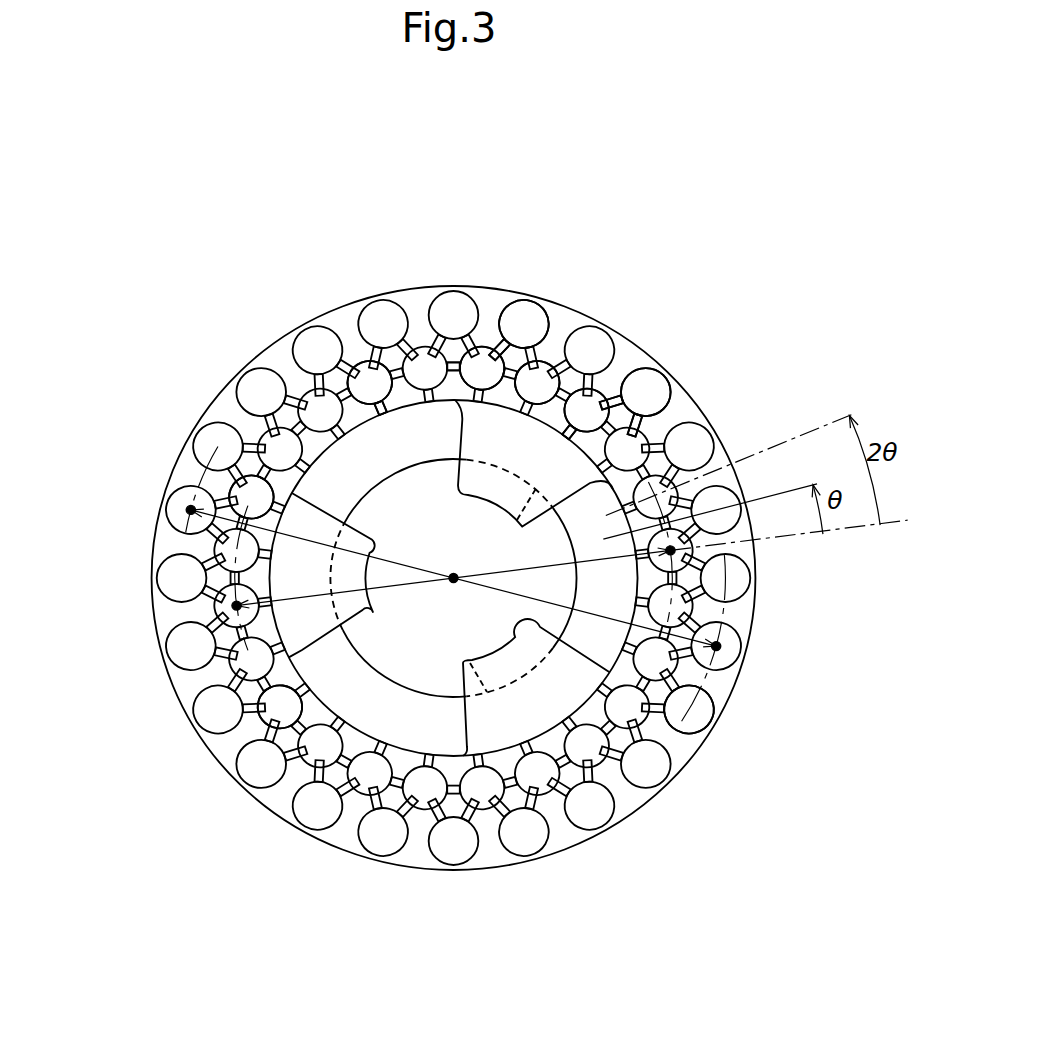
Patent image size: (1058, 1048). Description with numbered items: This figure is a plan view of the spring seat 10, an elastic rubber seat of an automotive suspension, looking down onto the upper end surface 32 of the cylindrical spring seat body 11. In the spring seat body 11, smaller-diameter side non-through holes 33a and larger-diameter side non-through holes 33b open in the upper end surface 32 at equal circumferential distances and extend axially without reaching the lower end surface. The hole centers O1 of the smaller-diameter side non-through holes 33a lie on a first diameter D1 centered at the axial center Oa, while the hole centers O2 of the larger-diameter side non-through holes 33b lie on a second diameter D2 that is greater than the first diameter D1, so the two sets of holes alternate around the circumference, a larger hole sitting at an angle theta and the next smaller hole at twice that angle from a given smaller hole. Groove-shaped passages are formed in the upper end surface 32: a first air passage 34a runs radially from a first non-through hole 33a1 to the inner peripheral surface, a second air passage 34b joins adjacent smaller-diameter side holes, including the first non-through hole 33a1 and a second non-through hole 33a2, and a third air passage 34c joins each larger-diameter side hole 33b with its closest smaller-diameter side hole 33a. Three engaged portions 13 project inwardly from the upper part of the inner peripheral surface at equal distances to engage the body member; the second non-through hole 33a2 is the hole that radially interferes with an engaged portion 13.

The spring seat 10 is at (757, 312).
The spring seat body 11 is at (675, 388).
The engaged portions 13 is at (507, 490).
The upper end surface 32 is at (720, 688).
The smaller-diameter side non-through holes 33a is at (606, 395).
The first non-through hole 33a1 is at (716, 722).
The second non-through hole 33a2 is at (543, 360).
The larger-diameter side non-through holes 33b is at (597, 388).
The first air passages 34a is at (378, 407).
The second air passages 34b is at (452, 366).
The third air passages 34c is at (498, 347).
The first diameter D1 is at (454, 573).
The second diameter D2 is at (453, 578).
The axial center Oa is at (453, 588).
The hole centers of the smaller-diameter side non-through holes O1 is at (228, 606).
The hole centers of the larger-diameter side non-through holes O2 is at (182, 509).